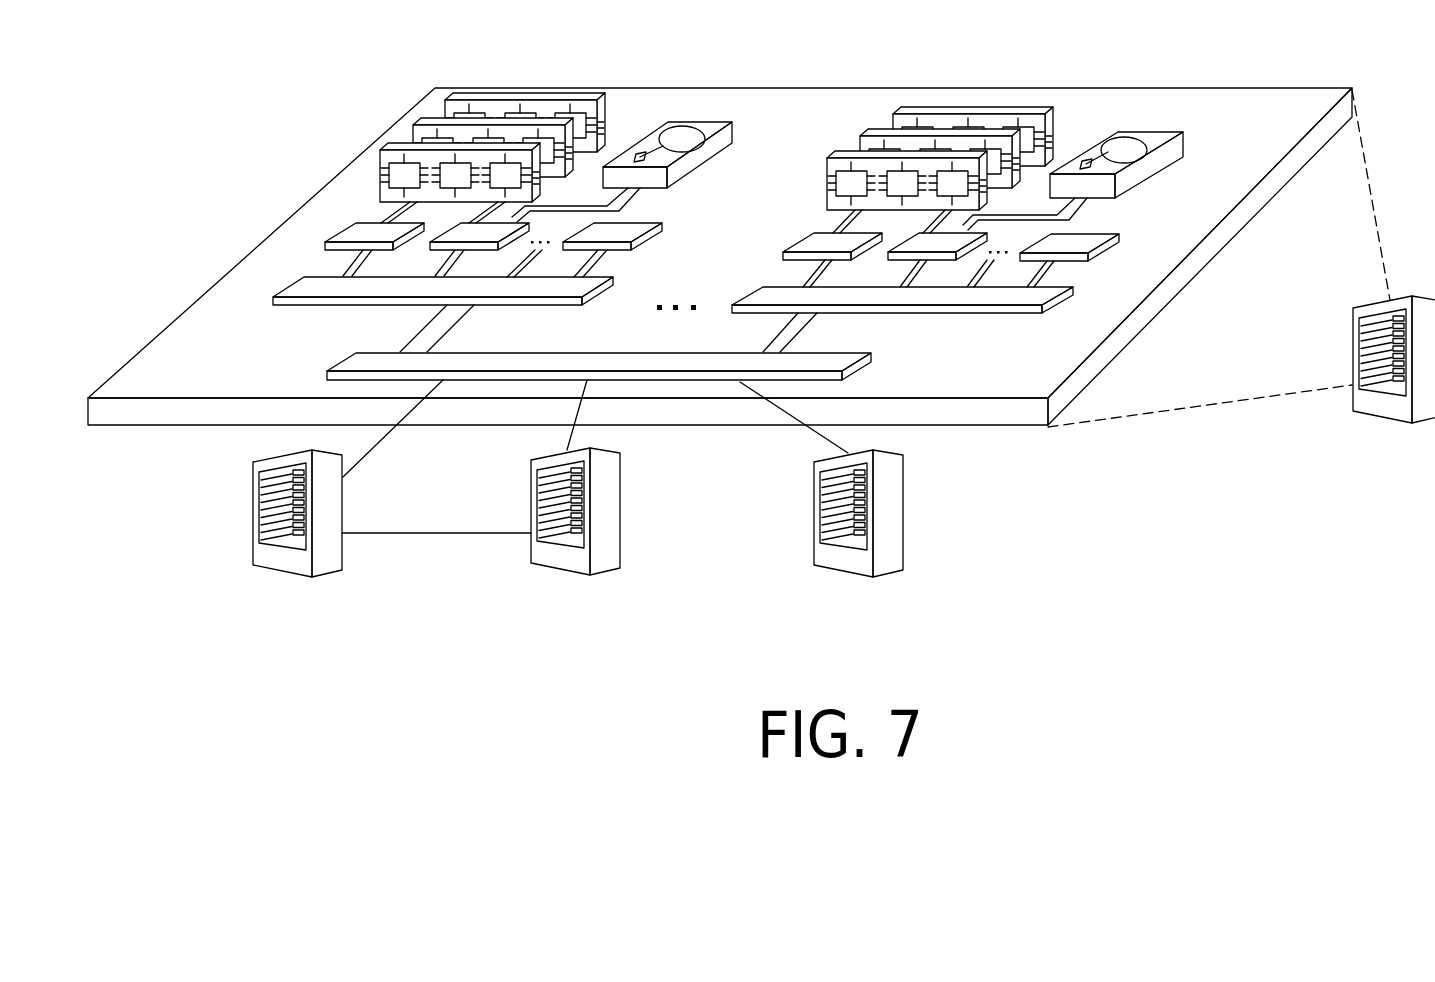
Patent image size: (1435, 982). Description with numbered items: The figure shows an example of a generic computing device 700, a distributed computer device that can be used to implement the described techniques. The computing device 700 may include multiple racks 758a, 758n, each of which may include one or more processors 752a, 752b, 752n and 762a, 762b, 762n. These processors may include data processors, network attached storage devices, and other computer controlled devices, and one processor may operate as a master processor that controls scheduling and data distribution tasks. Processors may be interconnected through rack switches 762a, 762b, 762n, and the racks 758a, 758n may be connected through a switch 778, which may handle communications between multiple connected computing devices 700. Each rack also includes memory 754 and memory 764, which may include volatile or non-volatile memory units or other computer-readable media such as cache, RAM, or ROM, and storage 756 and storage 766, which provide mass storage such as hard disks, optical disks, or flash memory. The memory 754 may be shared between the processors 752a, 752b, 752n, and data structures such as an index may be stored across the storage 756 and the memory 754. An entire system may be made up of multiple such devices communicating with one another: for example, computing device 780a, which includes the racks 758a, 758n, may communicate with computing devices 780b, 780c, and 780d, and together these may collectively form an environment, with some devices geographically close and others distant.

The computing device 700 is at (260, 104).
The memory 754 is at (530, 100).
The storage 756 is at (695, 121).
The memory 764 is at (975, 110).
The storage 766 is at (1143, 130).
The processor 752a is at (367, 236).
The processor 752b is at (469, 230).
The processor 752n is at (624, 236).
The processor 762a is at (832, 243).
The processor 762b is at (927, 247).
The processor 762n is at (1072, 243).
The rack 758a is at (313, 288).
The rack 758n is at (1022, 296).
The switch 778 is at (357, 363).
The computing device 780a is at (1353, 327).
The computing device 780b is at (253, 512).
The computing device 780c is at (531, 505).
The computing device 780d is at (815, 513).